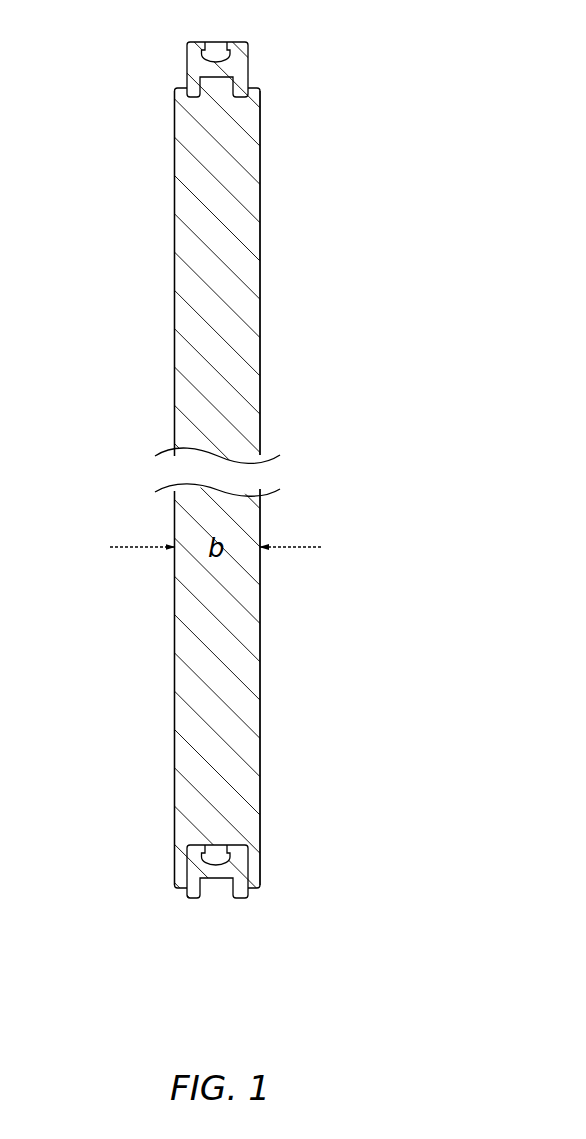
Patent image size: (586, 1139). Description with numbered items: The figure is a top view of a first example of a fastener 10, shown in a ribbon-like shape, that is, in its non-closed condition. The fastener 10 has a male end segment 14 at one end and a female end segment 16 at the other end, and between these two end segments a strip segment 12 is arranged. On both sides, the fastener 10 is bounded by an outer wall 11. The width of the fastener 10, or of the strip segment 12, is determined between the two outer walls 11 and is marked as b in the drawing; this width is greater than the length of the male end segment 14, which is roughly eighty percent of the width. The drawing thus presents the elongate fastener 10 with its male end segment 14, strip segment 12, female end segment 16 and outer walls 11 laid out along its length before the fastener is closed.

The fastener 10 is at (420, 52).
The outer wall 11 is at (175, 312).
The strip segment 12 is at (200, 686).
The male end segment 14 is at (140, 53).
The female end segment 16 is at (140, 872).